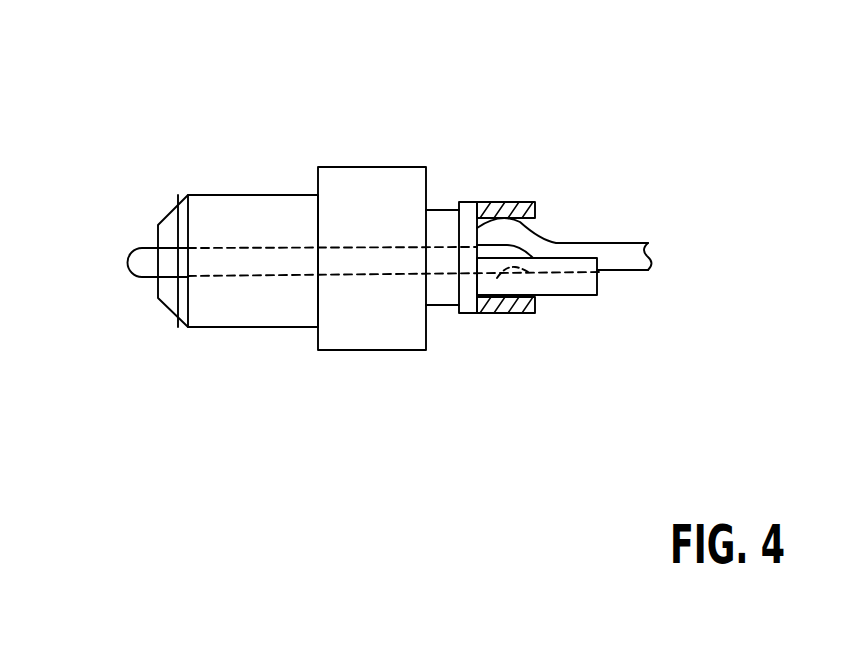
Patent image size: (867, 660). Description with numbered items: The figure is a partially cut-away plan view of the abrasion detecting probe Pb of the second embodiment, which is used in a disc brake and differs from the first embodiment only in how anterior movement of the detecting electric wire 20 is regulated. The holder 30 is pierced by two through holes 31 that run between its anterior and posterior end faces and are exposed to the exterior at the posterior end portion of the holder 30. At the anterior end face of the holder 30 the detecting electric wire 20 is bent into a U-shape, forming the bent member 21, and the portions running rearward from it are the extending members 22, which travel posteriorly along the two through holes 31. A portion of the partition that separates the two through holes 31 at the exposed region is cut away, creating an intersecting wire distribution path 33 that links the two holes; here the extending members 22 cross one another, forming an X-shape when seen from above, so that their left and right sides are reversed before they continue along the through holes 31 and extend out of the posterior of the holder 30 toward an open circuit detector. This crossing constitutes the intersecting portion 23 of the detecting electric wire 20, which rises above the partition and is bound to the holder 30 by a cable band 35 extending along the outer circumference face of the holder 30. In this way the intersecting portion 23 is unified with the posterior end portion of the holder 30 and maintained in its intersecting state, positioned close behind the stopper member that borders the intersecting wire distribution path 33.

The abrasion detecting probe Pb is at (455, 113).
The detecting electric wire 20 is at (622, 230).
The bent member 21 is at (143, 262).
The extending members 22 is at (373, 258).
The intersecting portion 23 is at (507, 225).
The holder 30 is at (212, 218).
The through holes 31 is at (394, 182).
The intersecting wire distribution path 33 is at (533, 277).
The cable band 35 is at (515, 298).